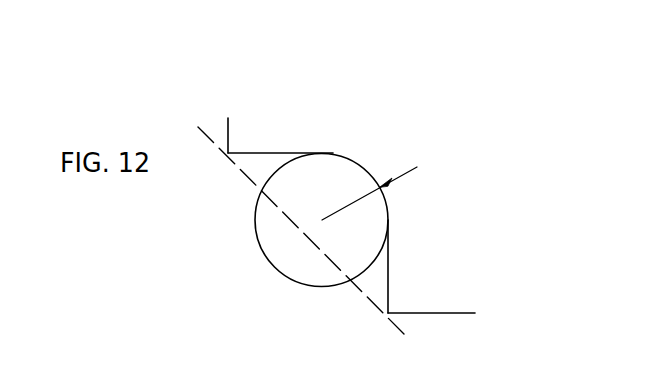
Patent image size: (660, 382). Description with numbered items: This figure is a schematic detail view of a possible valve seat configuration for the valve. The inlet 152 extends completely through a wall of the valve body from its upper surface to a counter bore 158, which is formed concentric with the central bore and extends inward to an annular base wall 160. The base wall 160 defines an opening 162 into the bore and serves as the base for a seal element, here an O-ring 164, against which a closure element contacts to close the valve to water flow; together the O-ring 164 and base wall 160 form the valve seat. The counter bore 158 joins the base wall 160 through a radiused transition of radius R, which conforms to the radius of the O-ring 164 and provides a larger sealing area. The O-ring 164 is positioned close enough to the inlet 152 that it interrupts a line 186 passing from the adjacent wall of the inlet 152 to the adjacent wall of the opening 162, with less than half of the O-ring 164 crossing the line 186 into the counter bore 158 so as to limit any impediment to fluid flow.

The inlet 152 is at (217, 127).
The counter bore 158 is at (253, 153).
The annular base wall 160 is at (384, 266).
The opening 162 is at (459, 326).
The O-ring 164 is at (333, 173).
The line 186 is at (387, 329).